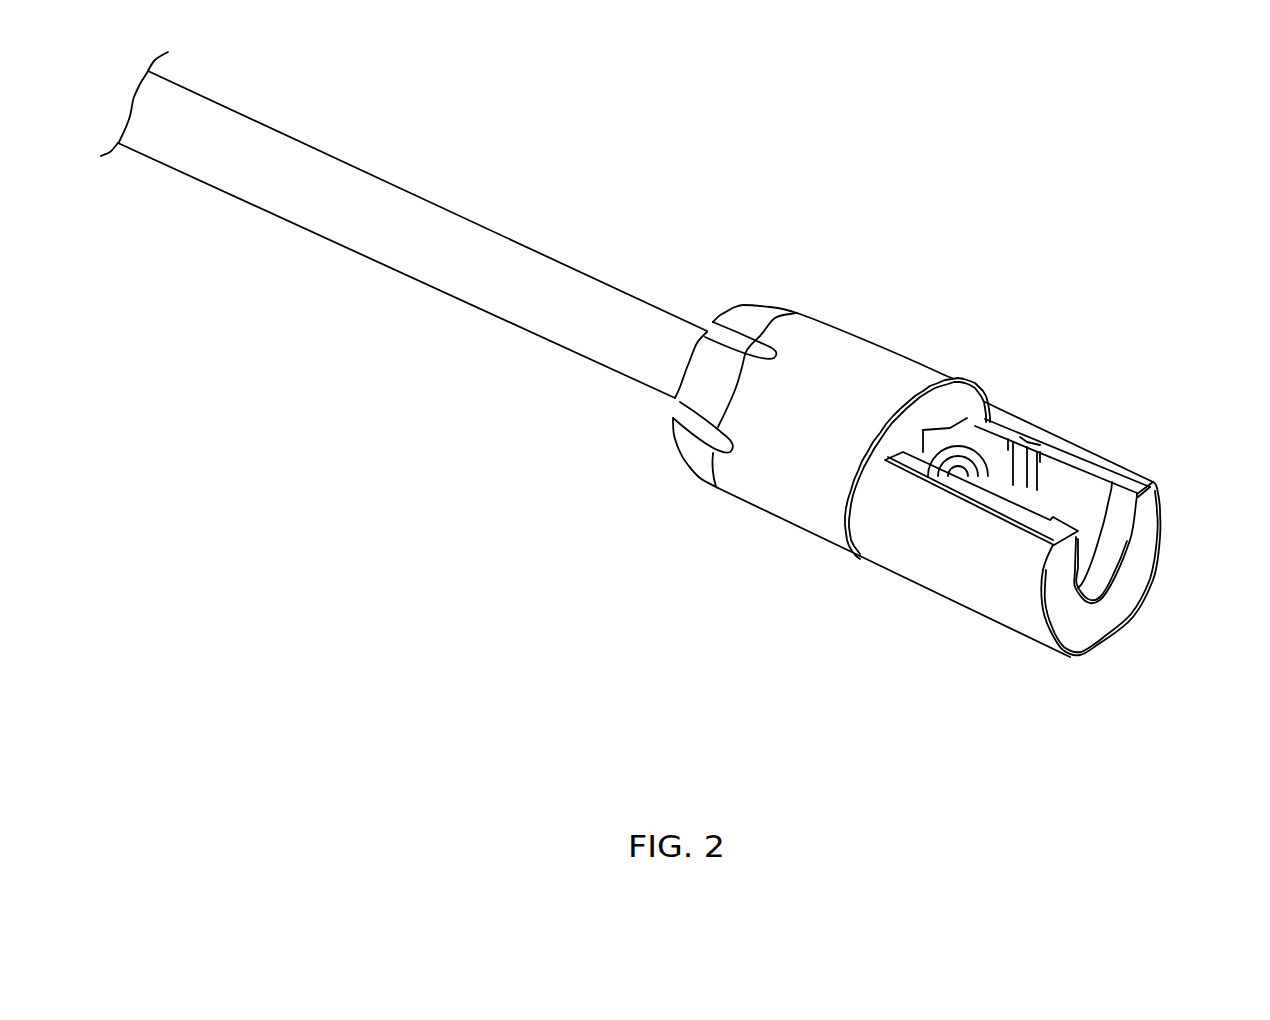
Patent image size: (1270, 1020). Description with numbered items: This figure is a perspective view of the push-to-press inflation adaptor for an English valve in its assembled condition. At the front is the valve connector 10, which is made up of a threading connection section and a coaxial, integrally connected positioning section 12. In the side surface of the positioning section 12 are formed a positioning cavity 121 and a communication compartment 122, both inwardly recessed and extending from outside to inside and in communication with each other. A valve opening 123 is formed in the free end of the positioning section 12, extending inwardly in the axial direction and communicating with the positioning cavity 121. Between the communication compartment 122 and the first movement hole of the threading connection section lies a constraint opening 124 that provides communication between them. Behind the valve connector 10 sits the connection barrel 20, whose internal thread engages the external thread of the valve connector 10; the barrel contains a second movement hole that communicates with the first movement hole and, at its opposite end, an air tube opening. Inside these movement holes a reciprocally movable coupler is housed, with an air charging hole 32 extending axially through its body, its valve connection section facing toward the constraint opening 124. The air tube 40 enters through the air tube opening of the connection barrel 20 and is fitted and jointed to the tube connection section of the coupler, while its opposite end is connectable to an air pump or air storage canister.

The valve connector 10 is at (973, 491).
The positioning section 12 is at (973, 529).
The positioning cavity 121 is at (1080, 487).
The communication compartment 122 is at (1013, 443).
The valve opening 123 is at (1103, 577).
The constraint opening 124 is at (887, 433).
The connection barrel 20 is at (833, 338).
The air charging hole 32 is at (943, 445).
The air tube 40 is at (373, 238).